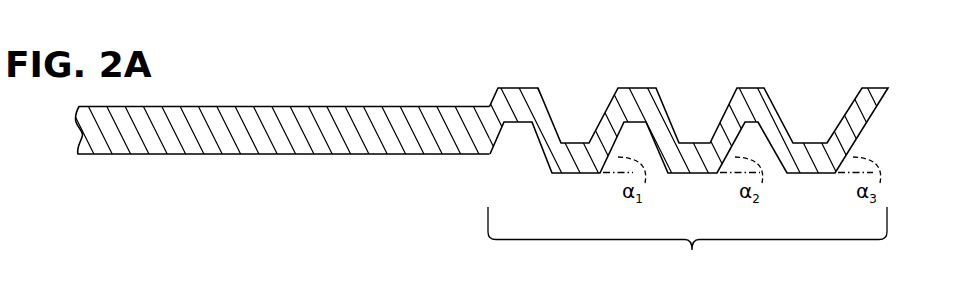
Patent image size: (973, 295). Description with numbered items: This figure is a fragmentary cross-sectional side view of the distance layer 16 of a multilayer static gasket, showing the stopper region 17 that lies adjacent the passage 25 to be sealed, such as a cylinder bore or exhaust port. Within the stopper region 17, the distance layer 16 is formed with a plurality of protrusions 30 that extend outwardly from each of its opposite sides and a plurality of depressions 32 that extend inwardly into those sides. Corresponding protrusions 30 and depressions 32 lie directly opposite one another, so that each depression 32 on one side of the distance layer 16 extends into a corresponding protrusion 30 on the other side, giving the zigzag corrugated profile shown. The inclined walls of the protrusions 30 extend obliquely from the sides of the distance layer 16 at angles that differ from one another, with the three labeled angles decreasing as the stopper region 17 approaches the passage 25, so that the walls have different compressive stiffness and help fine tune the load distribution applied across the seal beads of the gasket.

The distance layer 16 is at (111, 134).
The protrusions 30 is at (520, 98).
The depressions 32 is at (577, 102).
The stopper region 17 is at (687, 241).
The passage 25 is at (946, 140).